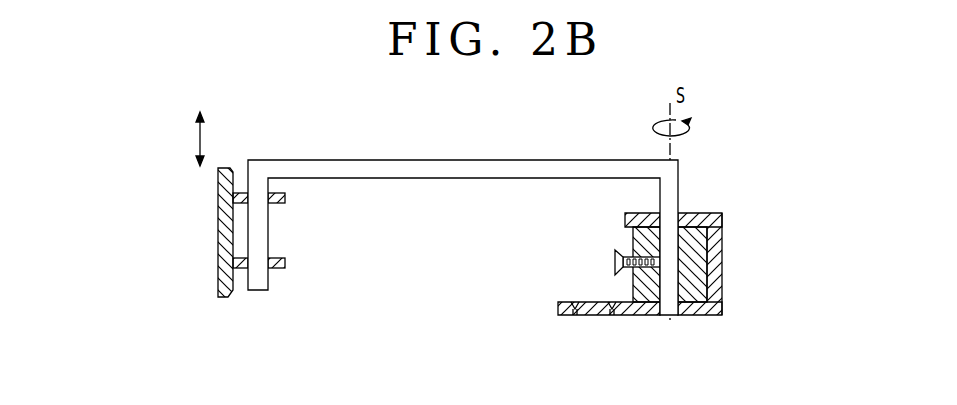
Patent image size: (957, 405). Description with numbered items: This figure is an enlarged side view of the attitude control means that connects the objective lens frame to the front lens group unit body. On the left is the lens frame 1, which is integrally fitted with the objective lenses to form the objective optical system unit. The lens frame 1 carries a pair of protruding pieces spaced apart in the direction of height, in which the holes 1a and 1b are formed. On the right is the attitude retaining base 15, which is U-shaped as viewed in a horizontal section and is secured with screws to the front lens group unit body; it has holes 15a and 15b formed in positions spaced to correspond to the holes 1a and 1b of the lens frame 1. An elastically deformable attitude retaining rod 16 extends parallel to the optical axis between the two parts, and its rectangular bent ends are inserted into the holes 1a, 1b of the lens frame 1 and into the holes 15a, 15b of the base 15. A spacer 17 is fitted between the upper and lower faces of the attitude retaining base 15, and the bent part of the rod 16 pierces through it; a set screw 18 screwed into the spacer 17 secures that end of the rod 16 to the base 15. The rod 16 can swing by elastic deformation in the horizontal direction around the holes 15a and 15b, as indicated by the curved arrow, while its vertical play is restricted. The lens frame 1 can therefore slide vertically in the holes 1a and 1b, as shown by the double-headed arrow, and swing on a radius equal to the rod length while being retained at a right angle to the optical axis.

The lens frame 1 is at (218, 198).
The hole 1a is at (273, 205).
The hole 1b is at (273, 268).
The attitude retaining base 15 is at (657, 268).
The hole 15a is at (682, 210).
The hole 15b is at (682, 316).
The attitude retaining rod 16 is at (441, 159).
The spacer 17 is at (637, 242).
The set screw 18 is at (614, 263).